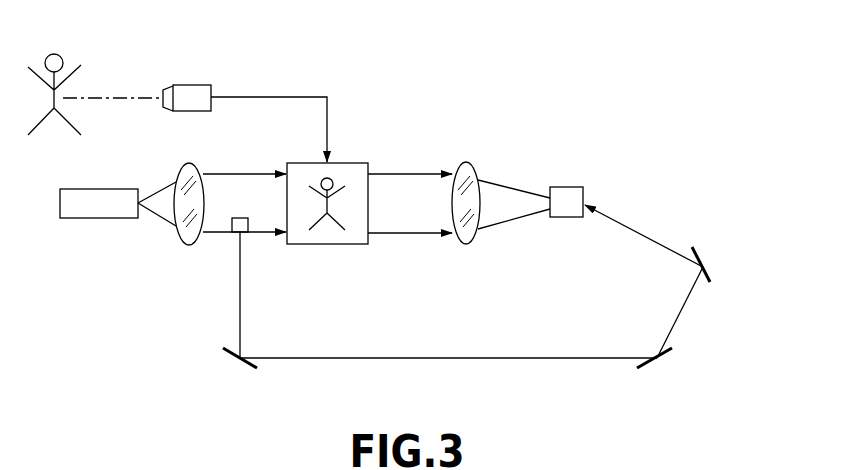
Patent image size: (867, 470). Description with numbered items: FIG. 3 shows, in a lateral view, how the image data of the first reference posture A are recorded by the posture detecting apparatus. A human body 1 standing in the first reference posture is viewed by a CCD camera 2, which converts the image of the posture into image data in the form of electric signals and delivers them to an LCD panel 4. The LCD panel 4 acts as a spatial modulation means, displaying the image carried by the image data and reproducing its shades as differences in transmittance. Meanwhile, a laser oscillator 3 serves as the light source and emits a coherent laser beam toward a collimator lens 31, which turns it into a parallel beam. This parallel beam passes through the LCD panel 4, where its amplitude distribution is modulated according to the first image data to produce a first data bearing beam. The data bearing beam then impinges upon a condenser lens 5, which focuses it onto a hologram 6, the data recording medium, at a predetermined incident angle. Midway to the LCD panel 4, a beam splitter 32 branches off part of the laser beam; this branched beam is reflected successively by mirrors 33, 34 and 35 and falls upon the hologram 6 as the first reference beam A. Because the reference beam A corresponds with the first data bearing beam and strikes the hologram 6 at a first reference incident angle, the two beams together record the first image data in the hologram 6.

The human body 1 is at (73, 62).
The CCD camera 2 is at (195, 85).
The laser oscillator 3 is at (100, 219).
The collimator lens 31 is at (189, 246).
The beam splitter 32 is at (248, 233).
The LCD panel 4 is at (332, 246).
The condenser lens 5 is at (462, 246).
The hologram 6 is at (565, 218).
The mirror 33 is at (232, 355).
The mirror 34 is at (662, 355).
The mirror 35 is at (707, 263).